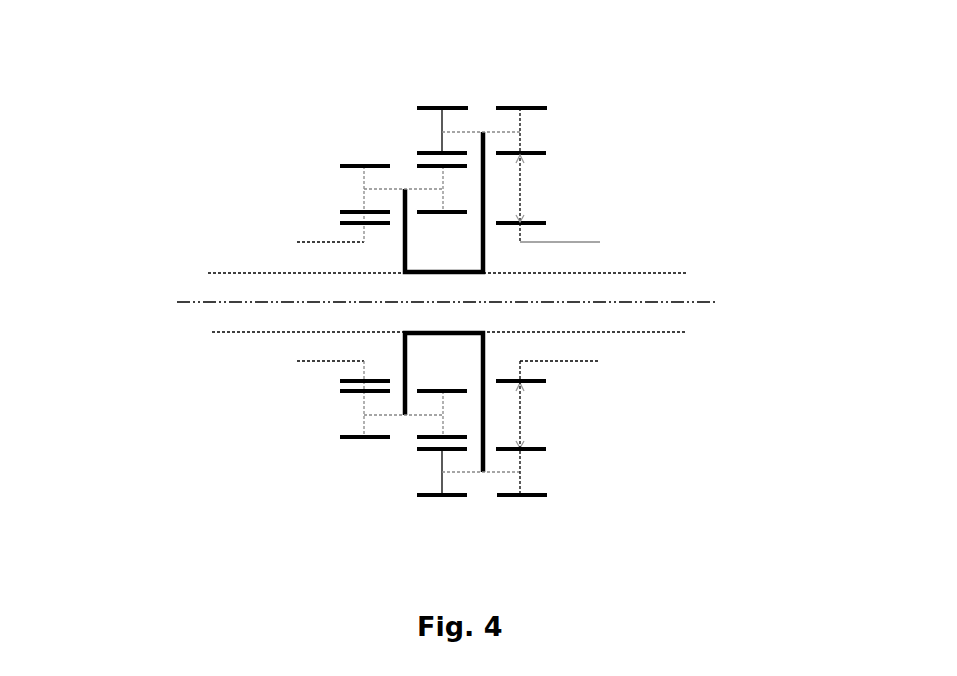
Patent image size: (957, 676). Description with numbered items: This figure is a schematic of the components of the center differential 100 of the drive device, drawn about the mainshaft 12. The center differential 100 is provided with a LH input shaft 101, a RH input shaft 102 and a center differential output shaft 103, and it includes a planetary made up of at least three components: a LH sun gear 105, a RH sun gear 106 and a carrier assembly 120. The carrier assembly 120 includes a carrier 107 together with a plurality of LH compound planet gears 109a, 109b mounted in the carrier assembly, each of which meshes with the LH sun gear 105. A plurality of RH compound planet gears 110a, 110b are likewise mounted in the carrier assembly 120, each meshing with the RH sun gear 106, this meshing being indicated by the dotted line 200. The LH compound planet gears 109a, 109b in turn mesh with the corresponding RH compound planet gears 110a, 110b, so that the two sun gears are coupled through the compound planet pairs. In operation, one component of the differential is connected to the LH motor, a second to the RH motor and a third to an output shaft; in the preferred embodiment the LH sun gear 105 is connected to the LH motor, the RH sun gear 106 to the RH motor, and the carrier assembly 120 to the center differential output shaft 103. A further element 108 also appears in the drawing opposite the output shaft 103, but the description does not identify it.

The mainshaft 12 is at (695, 302).
The center differential 100 is at (180, 34).
The LH input shaft 101 is at (312, 241).
The RH input shaft 102 is at (580, 242).
The center differential output shaft 103 is at (256, 273).
The LH sun gear 105 is at (340, 381).
The RH sun gear 106 is at (540, 382).
The carrier 107 is at (394, 260).
The second shaft 108 is at (620, 332).
The LH compound planet gear 109a is at (415, 163).
The LH compound planet gear 109b is at (417, 440).
The RH compound planet gear 110a is at (457, 108).
The RH compound planet gear 110b is at (437, 495).
The carrier assembly 120 is at (443, 54).
The dotted line 200 is at (522, 189).